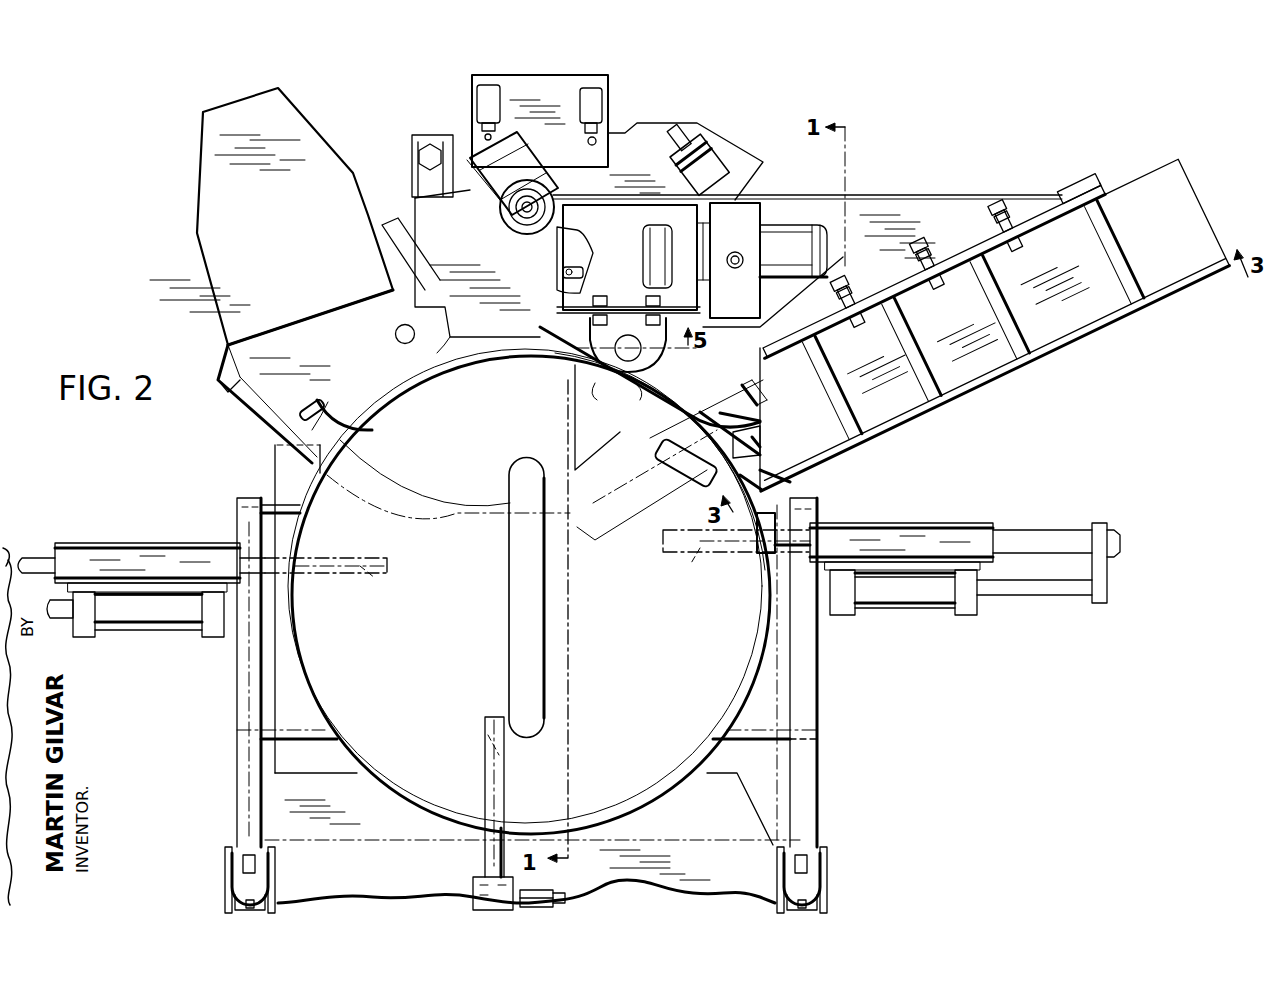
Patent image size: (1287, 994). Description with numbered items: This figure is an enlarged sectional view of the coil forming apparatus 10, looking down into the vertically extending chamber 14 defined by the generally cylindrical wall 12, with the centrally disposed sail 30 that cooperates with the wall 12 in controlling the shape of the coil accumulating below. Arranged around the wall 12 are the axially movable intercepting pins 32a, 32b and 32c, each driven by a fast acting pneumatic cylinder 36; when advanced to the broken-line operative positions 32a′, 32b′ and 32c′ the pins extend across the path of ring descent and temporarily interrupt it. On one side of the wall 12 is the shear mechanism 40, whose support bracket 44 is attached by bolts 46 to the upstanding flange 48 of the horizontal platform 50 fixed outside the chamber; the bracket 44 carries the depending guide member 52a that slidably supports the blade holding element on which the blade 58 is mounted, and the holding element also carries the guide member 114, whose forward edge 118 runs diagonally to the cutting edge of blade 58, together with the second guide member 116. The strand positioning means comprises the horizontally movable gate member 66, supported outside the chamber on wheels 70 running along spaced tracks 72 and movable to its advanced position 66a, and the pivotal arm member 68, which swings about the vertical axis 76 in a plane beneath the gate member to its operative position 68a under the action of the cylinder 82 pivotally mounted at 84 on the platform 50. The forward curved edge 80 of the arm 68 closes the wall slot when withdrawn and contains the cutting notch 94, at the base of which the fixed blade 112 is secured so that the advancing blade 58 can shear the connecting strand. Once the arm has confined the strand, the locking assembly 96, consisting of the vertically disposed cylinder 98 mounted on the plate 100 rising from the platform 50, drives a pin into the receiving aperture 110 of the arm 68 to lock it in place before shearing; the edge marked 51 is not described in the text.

The coil forming apparatus 10 is at (820, 706).
The cylindrical wall 12 is at (748, 672).
The chamber 14 is at (628, 657).
The sail 30 is at (515, 649).
The intercepting pin 32a is at (490, 858).
The operative position of intercepting pin 32a 32a′ is at (488, 757).
The intercepting pin 32b is at (268, 580).
The operative position of intercepting pin 32b 32b′ is at (375, 580).
The intercepting pin 32c is at (773, 547).
The operative position of intercepting pin 32c 32c′ is at (700, 548).
The pneumatic cylinders 36 is at (148, 618).
The shear mechanism 40 is at (970, 310).
The support bracket 44 is at (967, 370).
The bolts 46 is at (861, 323).
The upstanding flange 48 is at (1030, 207).
The horizontal platform 50 is at (880, 205).
The bracket edge 51 is at (639, 377).
The guide member 52a is at (760, 386).
The blade 58 is at (762, 448).
The gate member 66 is at (332, 793).
The advanced operative position of gate member 66a is at (425, 490).
The pivotal arm member 68 is at (239, 375).
The operative position of arm member 68a is at (620, 517).
The wheels 70 is at (245, 845).
The tracks 72 is at (243, 713).
The vertical axis 76 is at (523, 222).
The forward curved edge 80 is at (483, 375).
The cylinder 82 is at (772, 250).
The pivotal mounting 84 is at (734, 252).
The cutting notch 94 is at (312, 430).
The locking assembly 96 is at (596, 400).
The cylinder 98 is at (637, 387).
The plate 100 is at (615, 308).
The receiving aperture 110 is at (395, 335).
The blade 112 is at (310, 405).
The guide member 114 is at (760, 424).
The guide member 116 is at (775, 480).
The forward edge 118 is at (672, 437).